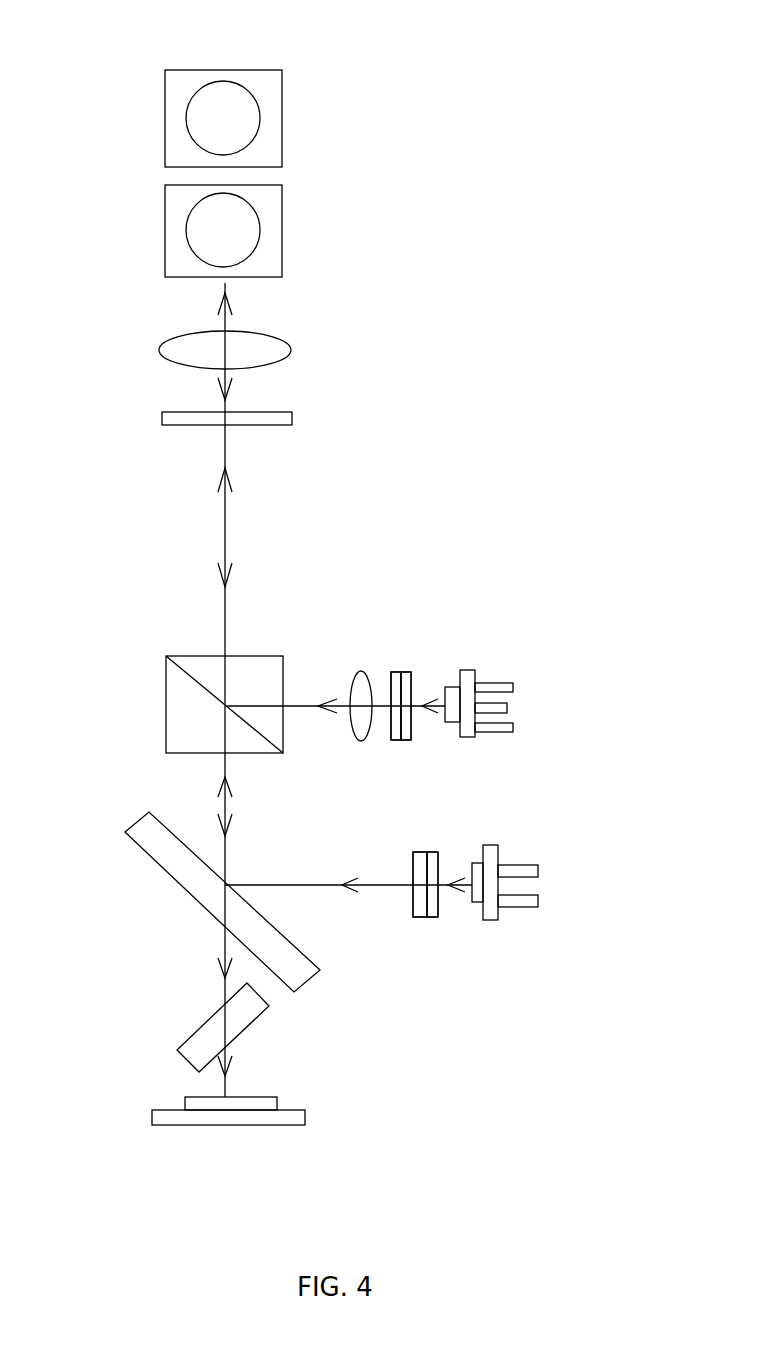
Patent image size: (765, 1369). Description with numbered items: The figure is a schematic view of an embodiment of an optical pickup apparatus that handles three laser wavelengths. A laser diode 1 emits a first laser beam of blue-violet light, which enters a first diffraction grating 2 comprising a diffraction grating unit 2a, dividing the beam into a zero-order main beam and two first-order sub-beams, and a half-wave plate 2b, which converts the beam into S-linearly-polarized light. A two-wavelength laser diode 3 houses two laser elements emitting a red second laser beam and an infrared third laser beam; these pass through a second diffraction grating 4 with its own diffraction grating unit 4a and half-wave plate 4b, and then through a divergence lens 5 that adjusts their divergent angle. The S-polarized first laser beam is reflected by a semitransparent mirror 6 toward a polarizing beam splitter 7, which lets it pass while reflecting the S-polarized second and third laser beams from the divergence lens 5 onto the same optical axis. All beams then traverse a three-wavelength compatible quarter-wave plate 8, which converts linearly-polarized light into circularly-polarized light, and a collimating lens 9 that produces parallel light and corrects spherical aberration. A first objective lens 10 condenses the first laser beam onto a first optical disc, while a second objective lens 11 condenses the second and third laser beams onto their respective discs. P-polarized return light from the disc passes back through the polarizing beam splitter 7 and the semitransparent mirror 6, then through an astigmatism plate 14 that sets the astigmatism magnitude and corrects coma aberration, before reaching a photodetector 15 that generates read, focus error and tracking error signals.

The laser diode 1 is at (498, 850).
The first diffraction grating 2 is at (428, 845).
The diffraction grating unit 2a is at (430, 918).
The half-wave plate 2b is at (420, 918).
The two-wavelength laser diode 3 is at (485, 668).
The second diffraction grating 4 is at (407, 668).
The diffraction grating unit 4a is at (413, 742).
The half-wave plate 4b is at (398, 742).
The divergence lens 5 is at (362, 670).
The semitransparent mirror 6 is at (160, 853).
The polarizing beam splitter 7 is at (173, 730).
The three-wavelength compatible quarter-wave plate 8 is at (268, 418).
The collimating lens 9 is at (272, 348).
The first objective lens 10 is at (230, 93).
The second objective lens 11 is at (250, 218).
The astigmatism plate 14 is at (253, 1023).
The photodetector 15 is at (240, 1115).